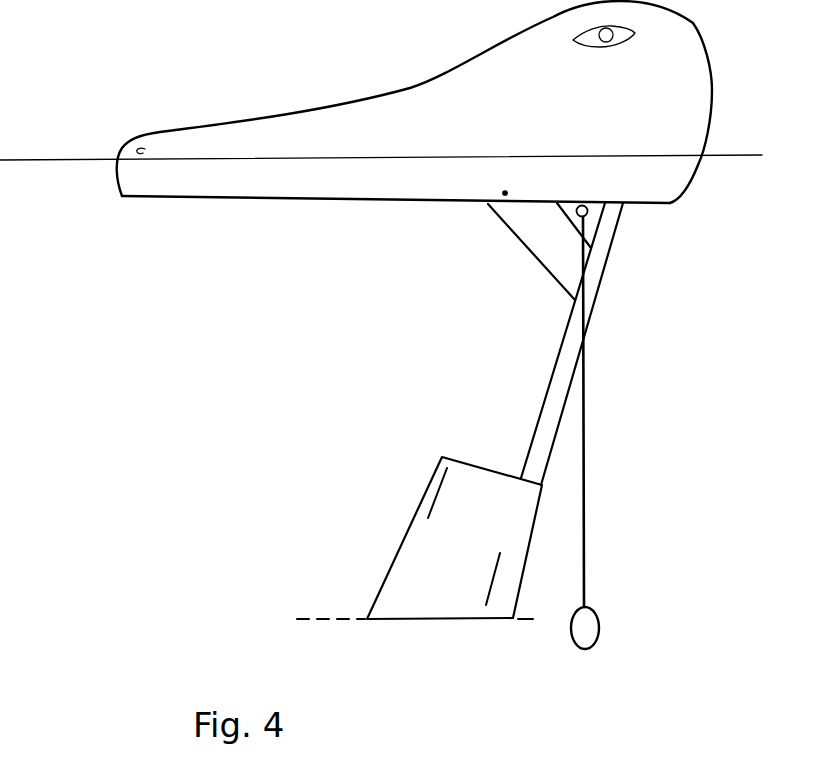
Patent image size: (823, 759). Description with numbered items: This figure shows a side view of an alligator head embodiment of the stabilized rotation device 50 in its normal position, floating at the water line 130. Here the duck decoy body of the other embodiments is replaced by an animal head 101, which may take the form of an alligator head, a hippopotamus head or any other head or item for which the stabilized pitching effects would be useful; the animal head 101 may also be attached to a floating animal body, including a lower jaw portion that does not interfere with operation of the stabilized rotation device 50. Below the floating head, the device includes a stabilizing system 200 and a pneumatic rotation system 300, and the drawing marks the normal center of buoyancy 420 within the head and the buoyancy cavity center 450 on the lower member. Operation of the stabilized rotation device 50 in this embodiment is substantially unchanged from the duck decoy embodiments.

The animal head 101 is at (712, 122).
The stabilized rotation device 50 is at (695, 170).
The water line 130 is at (95, 160).
The normal center of buoyancy 420 is at (505, 193).
The pneumatic rotation system 300 is at (612, 260).
The stabilizing system 200 is at (585, 372).
The buoyancy cavity center 450 is at (465, 548).